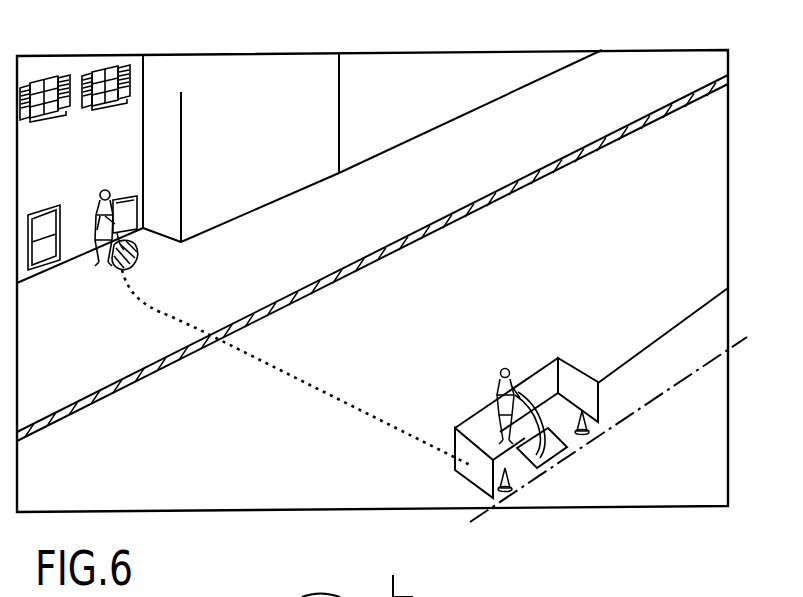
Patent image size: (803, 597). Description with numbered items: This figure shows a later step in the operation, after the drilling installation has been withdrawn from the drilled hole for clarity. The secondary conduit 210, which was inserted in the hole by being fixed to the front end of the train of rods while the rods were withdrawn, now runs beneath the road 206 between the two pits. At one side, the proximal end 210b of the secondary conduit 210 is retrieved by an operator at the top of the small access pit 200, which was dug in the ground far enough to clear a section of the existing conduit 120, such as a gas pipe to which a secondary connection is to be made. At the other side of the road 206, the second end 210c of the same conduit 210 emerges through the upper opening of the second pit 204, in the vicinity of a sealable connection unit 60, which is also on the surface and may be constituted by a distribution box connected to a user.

The sealable connection unit 60 is at (127, 207).
The second end of the secondary conduit 210c is at (127, 227).
The second pit 204 is at (121, 268).
The road 206 is at (647, 213).
The secondary conduit 210 is at (345, 420).
The proximal end of the secondary conduit 210b is at (523, 395).
The access pit 200 is at (562, 458).
The conduit 120 is at (662, 395).